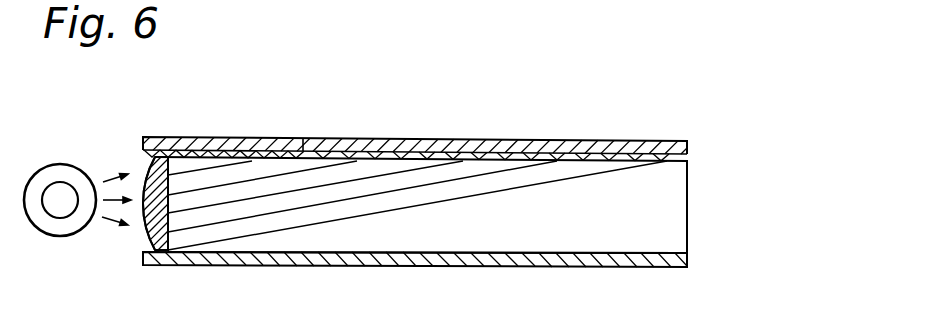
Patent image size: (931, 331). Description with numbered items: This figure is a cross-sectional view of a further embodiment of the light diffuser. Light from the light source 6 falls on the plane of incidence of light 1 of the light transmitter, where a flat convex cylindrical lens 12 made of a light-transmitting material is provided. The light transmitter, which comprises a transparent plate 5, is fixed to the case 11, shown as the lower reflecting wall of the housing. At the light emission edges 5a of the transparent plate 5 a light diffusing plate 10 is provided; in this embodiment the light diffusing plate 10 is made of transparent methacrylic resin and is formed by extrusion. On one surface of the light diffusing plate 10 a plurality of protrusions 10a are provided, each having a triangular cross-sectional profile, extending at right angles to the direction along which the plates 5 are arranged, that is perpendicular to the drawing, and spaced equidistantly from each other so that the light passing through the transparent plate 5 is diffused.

The plane of incidence of light 1 is at (150, 228).
The transparent plate 5 is at (278, 202).
The light emission edge 5a is at (303, 147).
The light source 6 is at (60, 237).
The light diffusing plate 10 is at (400, 147).
The protrusions 10a is at (538, 152).
The case 11 is at (473, 258).
The lens 12 is at (143, 172).